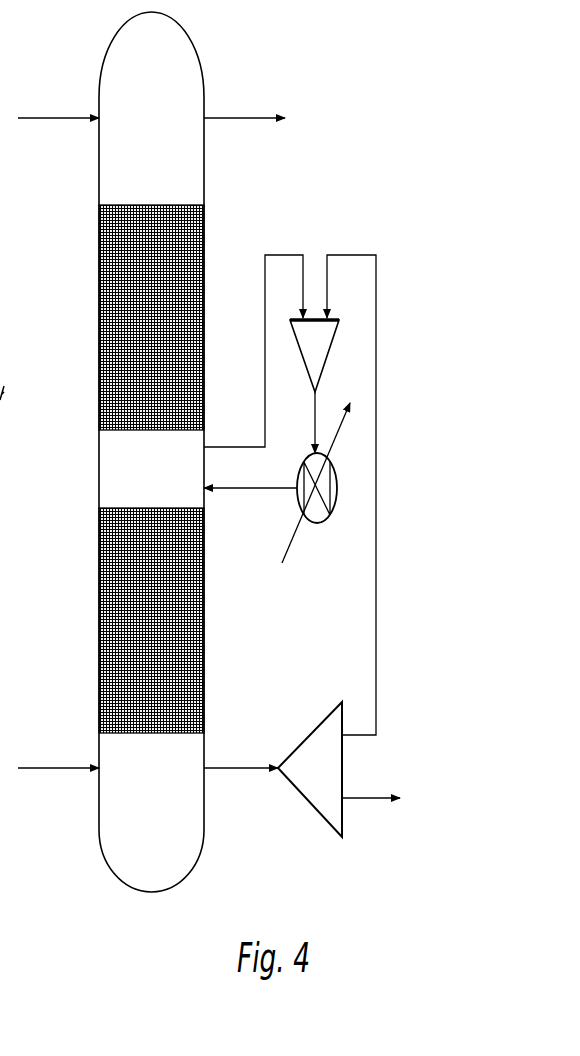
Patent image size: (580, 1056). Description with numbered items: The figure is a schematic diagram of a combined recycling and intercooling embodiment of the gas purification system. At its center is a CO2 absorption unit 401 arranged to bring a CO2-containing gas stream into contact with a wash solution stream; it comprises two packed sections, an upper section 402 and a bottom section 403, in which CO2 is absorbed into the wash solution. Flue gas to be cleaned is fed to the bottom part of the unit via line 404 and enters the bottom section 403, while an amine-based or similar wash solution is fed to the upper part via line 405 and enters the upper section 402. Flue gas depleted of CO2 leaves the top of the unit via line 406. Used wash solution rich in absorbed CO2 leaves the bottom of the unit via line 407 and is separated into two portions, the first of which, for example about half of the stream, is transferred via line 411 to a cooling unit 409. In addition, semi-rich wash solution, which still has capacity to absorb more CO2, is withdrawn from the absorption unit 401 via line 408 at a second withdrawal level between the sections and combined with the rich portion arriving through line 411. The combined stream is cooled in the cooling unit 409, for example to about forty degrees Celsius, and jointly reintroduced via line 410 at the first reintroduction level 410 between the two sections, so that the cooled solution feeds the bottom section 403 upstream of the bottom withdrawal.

The CO2 absorption unit 401 is at (201, 70).
The upper section 402 is at (106, 335).
The bottom section 403 is at (205, 612).
The line 404 is at (55, 772).
The line 405 is at (50, 114).
The line 406 is at (243, 122).
The line 407 is at (245, 760).
The line 408 is at (247, 440).
The cooling unit 409 is at (318, 525).
The first reintroduction level 410 is at (253, 493).
The line 411 is at (363, 733).